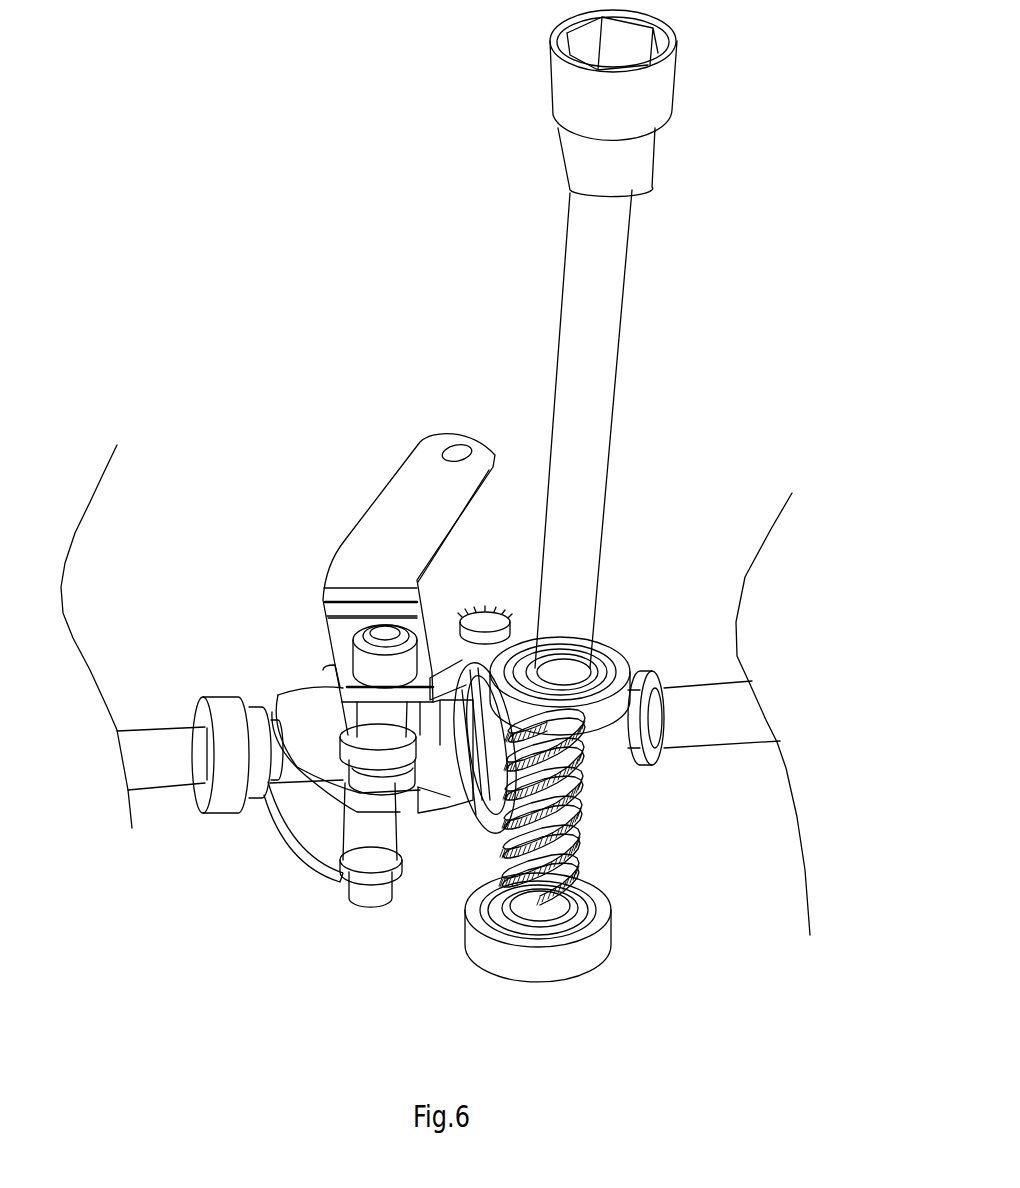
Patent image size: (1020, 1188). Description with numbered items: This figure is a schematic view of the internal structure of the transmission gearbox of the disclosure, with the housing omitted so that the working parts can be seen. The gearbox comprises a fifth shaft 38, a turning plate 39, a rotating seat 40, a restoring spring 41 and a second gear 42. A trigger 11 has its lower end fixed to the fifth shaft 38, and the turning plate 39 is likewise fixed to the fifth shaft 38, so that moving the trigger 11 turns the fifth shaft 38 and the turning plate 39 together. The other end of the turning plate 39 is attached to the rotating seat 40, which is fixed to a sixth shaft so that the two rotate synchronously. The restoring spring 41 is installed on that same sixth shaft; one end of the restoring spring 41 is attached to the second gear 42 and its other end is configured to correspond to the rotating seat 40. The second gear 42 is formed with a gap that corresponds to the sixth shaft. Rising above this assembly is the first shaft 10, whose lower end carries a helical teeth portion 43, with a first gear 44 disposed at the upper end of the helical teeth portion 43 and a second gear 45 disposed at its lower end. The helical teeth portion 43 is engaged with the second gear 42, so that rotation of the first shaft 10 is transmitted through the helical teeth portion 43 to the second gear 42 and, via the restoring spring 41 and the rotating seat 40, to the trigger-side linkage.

The first shaft 10 is at (585, 452).
The trigger 11 is at (373, 557).
The fifth shaft 38 is at (368, 828).
The turning plate 39 is at (300, 808).
The rotating seat 40 is at (433, 790).
The restoring spring 41 is at (455, 710).
The second gear 42 is at (503, 615).
The helical teeth portion 43 is at (590, 840).
The first gear 44 is at (617, 660).
The second gear 45 is at (568, 957).